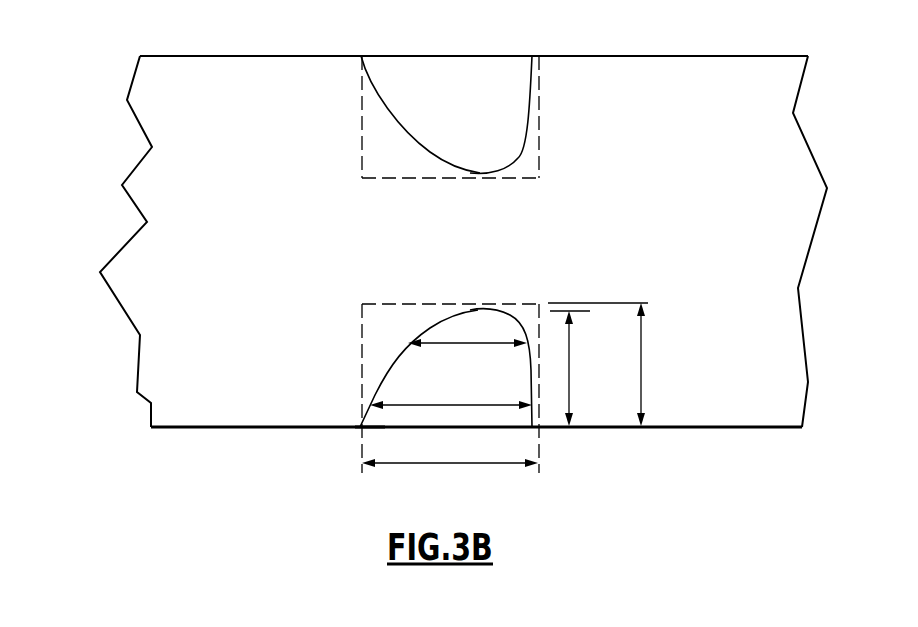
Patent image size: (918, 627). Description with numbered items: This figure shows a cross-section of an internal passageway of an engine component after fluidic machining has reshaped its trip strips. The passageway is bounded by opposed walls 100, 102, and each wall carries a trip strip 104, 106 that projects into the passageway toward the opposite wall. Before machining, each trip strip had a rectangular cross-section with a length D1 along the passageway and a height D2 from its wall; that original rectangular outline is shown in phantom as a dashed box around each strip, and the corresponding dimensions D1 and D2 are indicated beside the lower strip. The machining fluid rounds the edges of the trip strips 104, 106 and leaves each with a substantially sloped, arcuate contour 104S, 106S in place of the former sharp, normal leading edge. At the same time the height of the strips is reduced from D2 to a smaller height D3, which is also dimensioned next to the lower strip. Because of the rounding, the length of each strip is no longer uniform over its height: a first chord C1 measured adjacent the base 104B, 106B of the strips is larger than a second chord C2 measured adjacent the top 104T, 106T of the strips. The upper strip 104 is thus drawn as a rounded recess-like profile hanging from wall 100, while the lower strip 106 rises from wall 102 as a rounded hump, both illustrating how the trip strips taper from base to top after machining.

The wall 100 is at (700, 56).
The wall 102 is at (731, 427).
The trip strip 104 is at (413, 122).
The base of trip strip 104B is at (460, 56).
The sloped arcuate contour 104S is at (400, 133).
The top of trip strip 104T is at (480, 173).
The trip strip 106 is at (391, 359).
The base of trip strip 106B is at (384, 427).
The sloped arcuate contour 106S is at (408, 342).
The top of trip strip 106T is at (466, 312).
The first chord C1 is at (478, 403).
The second chord C2 is at (488, 343).
The first distance D1 is at (468, 463).
The second distance D2 is at (641, 363).
The reduced height D3 is at (569, 352).